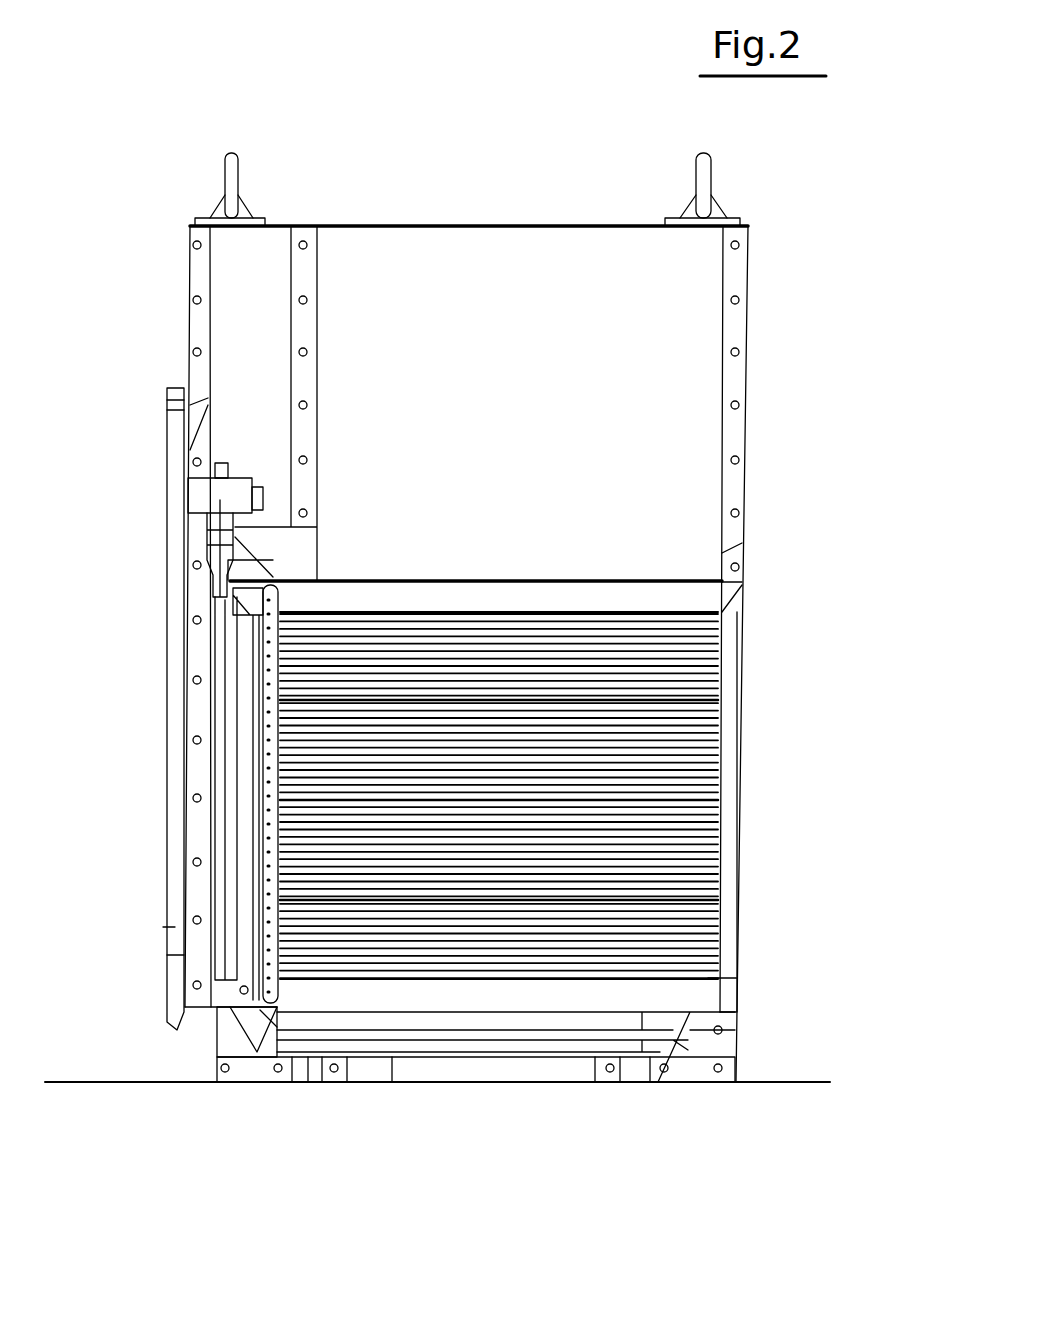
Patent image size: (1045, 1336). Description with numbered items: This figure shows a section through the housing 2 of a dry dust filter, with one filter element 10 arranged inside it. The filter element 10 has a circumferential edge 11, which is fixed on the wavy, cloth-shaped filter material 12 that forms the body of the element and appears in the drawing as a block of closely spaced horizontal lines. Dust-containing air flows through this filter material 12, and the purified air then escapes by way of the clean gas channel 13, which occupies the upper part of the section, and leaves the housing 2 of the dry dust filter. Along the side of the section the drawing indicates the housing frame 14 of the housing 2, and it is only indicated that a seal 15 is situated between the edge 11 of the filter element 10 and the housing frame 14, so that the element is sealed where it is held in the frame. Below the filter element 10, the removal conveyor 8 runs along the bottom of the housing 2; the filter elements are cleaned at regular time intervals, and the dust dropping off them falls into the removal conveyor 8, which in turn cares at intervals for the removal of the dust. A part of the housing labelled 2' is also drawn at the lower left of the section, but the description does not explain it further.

The housing 2 is at (514, 617).
The frame actuating rod 2' is at (191, 826).
The removal conveyor 8 is at (505, 1035).
The filter element 10 is at (600, 677).
The circumferential edge 11 is at (277, 1000).
The filter material 12 is at (600, 677).
The clean gas channel 13 is at (546, 257).
The housing frame 14 is at (262, 796).
The seal 15 is at (273, 679).